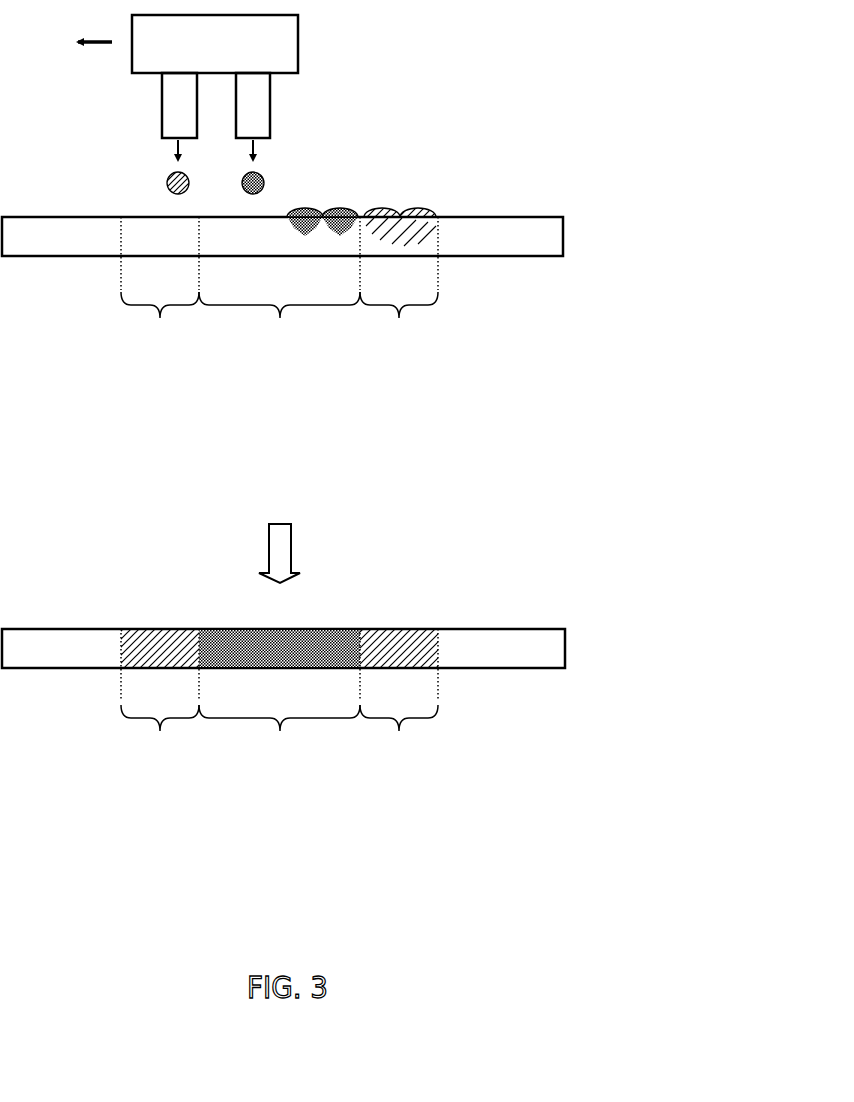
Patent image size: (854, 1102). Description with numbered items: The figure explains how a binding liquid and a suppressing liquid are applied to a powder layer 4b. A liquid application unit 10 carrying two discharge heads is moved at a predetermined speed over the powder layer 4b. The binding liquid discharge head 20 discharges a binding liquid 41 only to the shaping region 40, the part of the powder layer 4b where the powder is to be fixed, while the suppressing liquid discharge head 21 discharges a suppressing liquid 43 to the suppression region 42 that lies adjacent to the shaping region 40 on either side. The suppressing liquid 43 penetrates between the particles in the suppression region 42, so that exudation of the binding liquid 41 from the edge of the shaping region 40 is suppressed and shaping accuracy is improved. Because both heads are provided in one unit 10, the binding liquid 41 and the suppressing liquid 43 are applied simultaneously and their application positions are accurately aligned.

The liquid application unit 10 is at (293, 46).
The binding liquid discharge head 20 is at (272, 116).
The suppressing liquid discharge head 21 is at (168, 112).
The binding liquid 41 is at (265, 182).
The suppressing liquid 43 is at (170, 181).
The powder layer 4b is at (486, 227).
The shaping region 40 is at (279, 565).
The suppression region 42 is at (282, 582).